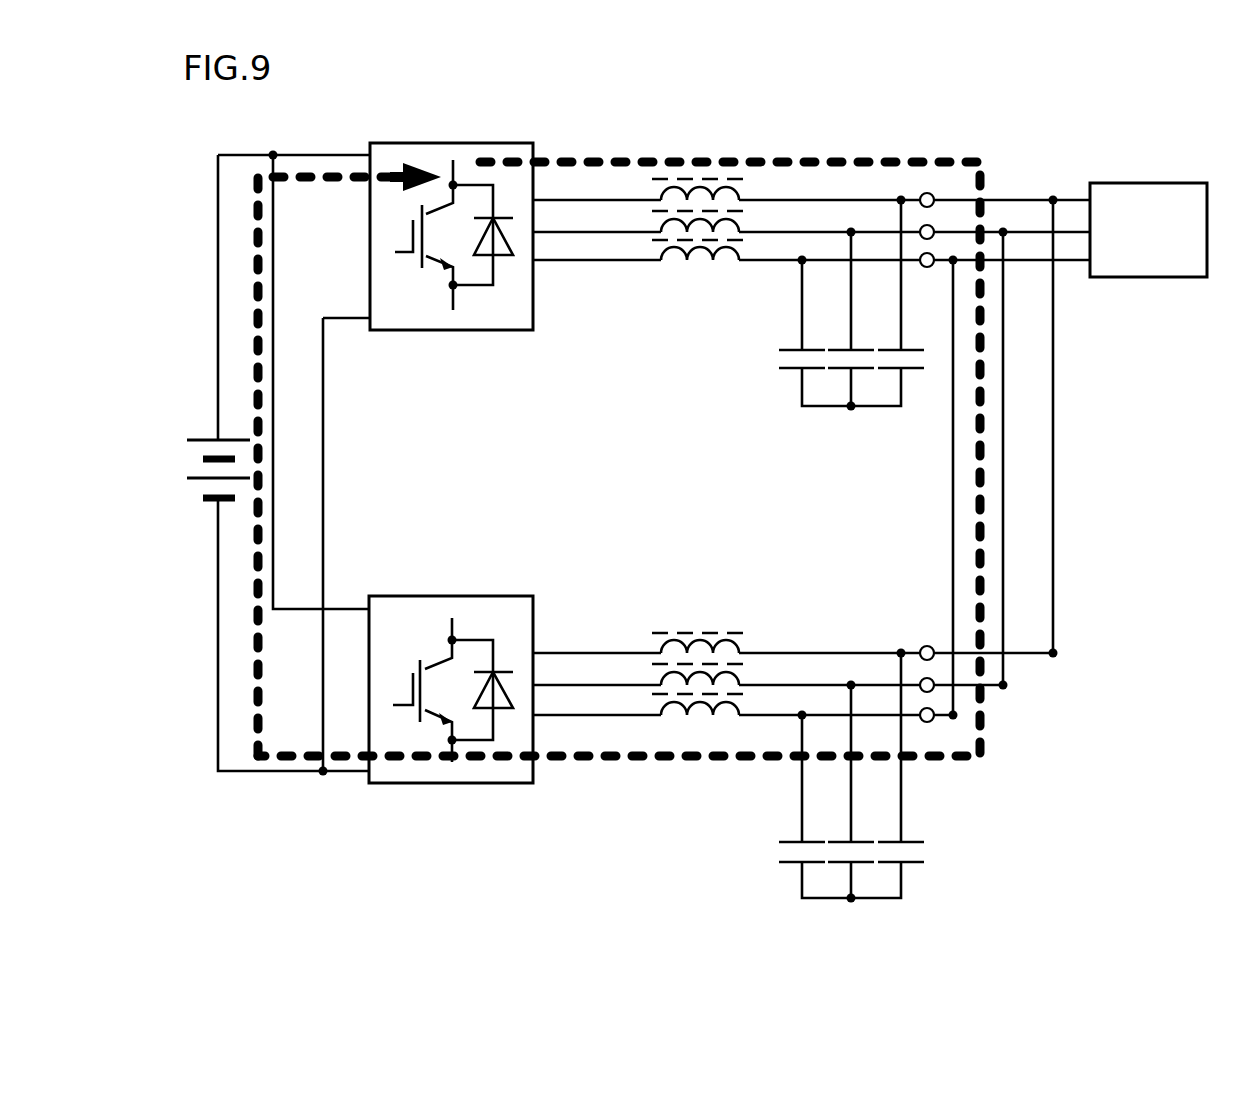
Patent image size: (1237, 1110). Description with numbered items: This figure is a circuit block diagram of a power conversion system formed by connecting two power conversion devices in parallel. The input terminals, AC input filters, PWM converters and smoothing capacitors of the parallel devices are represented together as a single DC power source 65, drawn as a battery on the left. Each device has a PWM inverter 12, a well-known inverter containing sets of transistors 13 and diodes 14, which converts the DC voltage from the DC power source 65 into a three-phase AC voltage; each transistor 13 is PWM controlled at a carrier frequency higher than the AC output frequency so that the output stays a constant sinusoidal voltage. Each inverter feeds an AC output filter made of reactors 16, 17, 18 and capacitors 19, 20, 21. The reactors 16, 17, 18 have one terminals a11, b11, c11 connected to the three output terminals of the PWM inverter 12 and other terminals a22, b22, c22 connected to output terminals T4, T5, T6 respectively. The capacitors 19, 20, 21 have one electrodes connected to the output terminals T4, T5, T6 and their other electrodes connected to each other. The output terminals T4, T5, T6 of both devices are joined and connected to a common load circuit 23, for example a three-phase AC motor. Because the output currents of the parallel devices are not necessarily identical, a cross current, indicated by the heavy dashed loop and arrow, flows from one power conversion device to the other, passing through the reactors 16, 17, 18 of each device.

The PWM inverter 12 is at (455, 143).
The transistor 13 is at (447, 264).
The diode 14 is at (507, 262).
The reactor 16 is at (700, 190).
The reactor 17 is at (723, 222).
The reactor 18 is at (701, 268).
The capacitor 19 is at (790, 348).
The capacitor 20 is at (840, 348).
The capacitor 21 is at (890, 348).
The load circuit 23 is at (1147, 182).
The DC power source 65 is at (205, 438).
The output terminal T4 is at (927, 192).
The output terminal T5 is at (934, 227).
The output terminal T6 is at (927, 268).
The one terminal of reactor a11 is at (661, 199).
The one terminal of reactor b11 is at (661, 231).
The one terminal of reactor c11 is at (661, 259).
The other terminal of reactor a22 is at (739, 199).
The other terminal of reactor b22 is at (739, 231).
The other terminal of reactor c22 is at (739, 259).